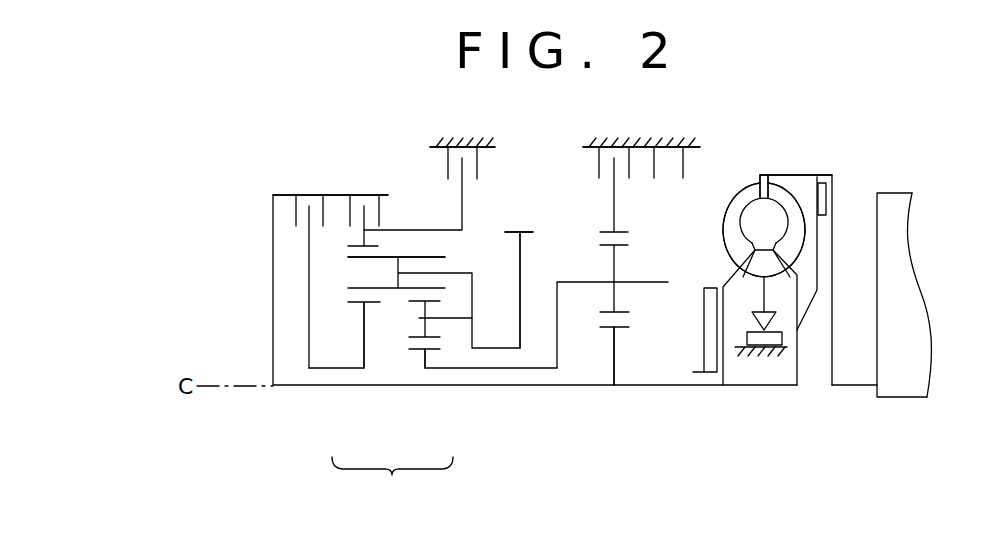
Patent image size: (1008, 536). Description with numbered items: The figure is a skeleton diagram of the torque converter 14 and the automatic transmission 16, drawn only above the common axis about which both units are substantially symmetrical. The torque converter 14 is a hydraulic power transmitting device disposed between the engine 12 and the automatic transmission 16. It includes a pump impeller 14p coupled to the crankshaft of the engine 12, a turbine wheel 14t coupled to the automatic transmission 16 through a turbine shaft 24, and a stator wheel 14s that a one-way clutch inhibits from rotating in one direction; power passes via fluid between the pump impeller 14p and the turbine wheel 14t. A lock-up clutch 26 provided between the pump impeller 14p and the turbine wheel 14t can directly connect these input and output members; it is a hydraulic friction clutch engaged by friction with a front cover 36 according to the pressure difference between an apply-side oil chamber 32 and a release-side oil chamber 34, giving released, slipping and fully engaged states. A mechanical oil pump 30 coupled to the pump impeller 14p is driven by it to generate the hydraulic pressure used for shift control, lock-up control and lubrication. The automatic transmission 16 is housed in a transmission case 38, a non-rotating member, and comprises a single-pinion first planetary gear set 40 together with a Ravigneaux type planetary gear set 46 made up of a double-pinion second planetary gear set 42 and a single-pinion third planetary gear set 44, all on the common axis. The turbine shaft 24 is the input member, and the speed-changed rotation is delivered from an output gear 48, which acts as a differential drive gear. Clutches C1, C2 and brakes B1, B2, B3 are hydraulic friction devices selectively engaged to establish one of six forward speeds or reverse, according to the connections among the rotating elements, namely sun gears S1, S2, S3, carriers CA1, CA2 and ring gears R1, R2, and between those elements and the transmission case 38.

The engine 12 is at (900, 392).
The torque converter 14 is at (760, 151).
The turbine wheel 14t is at (777, 195).
The pump impeller 14p is at (725, 240).
The stator wheel 14s is at (757, 267).
The automatic transmission 16 is at (383, 137).
The turbine shaft 24 is at (768, 386).
The lock-up clutch 26 is at (829, 176).
The mechanical oil pump 30 is at (703, 335).
The apply-side oil chamber 32 is at (823, 175).
The release-side oil chamber 34 is at (827, 228).
The front cover 36 is at (833, 313).
The transmission case 38 is at (468, 140).
The first planetary gear set 40 is at (618, 400).
The second planetary gear set 42 is at (369, 399).
The third planetary gear set 44 is at (428, 399).
The Ravigneaux type planetary gear set 46 is at (392, 482).
The output gear 48 is at (527, 232).
The clutch C1 is at (309, 268).
The clutch C2 is at (364, 207).
The brake B1 is at (686, 158).
The brake B2 is at (470, 158).
The brake B3 is at (632, 158).
The sun gear S1 is at (612, 334).
The sun gear S2 is at (420, 350).
The sun gear S3 is at (364, 303).
The ring gear R1 is at (610, 230).
The ring gear R2 is at (360, 246).
The carrier CA1 is at (625, 282).
The carrier CA2 is at (466, 272).